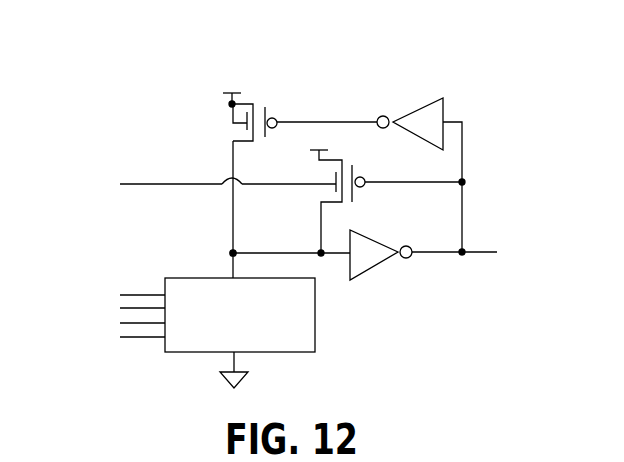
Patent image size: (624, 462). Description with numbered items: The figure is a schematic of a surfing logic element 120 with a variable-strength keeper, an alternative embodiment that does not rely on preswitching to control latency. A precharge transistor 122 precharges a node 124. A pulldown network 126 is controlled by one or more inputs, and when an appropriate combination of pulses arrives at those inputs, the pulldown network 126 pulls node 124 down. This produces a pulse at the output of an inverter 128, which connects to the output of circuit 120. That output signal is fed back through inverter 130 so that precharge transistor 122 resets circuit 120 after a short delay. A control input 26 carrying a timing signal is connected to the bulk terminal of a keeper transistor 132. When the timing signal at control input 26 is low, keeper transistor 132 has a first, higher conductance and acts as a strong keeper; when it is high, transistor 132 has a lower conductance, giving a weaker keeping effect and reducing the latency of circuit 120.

The logic element 120 is at (206, 77).
The precharge transistor 122 is at (253, 104).
The node 124 is at (230, 252).
The pulldown network 126 is at (315, 328).
The inverter 128 is at (373, 270).
The inverter 130 is at (443, 100).
The keeper transistor 132 is at (354, 194).
The control input 26 is at (173, 183).